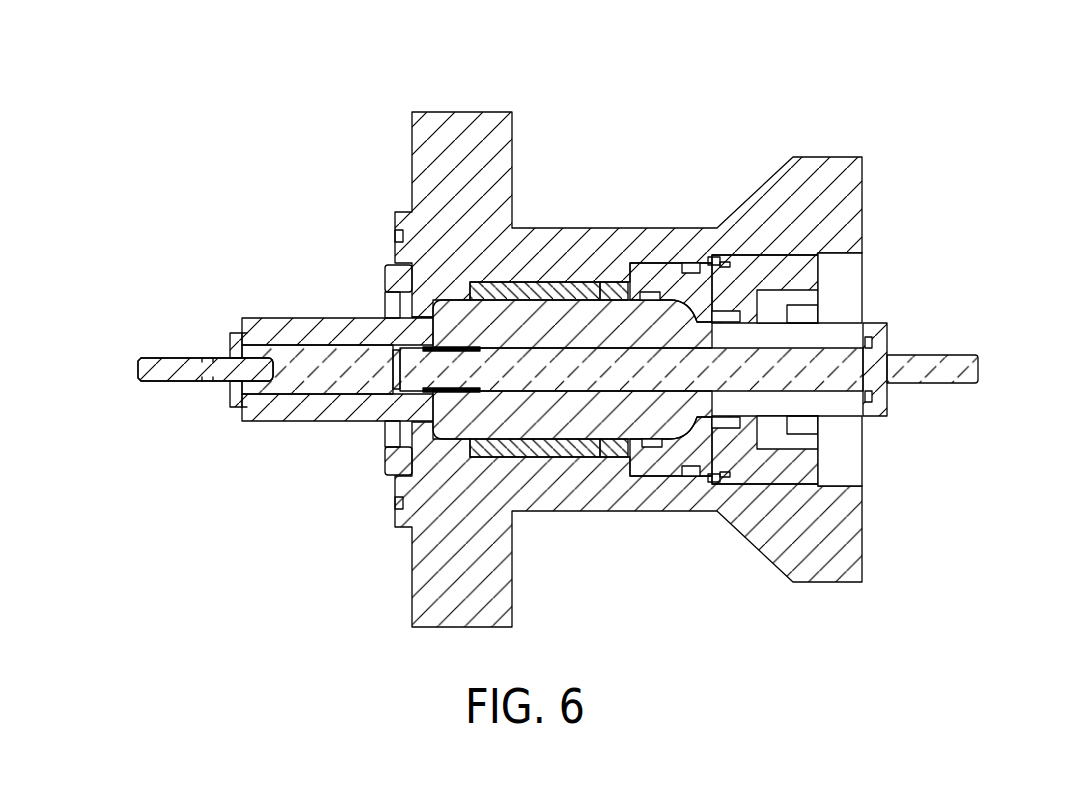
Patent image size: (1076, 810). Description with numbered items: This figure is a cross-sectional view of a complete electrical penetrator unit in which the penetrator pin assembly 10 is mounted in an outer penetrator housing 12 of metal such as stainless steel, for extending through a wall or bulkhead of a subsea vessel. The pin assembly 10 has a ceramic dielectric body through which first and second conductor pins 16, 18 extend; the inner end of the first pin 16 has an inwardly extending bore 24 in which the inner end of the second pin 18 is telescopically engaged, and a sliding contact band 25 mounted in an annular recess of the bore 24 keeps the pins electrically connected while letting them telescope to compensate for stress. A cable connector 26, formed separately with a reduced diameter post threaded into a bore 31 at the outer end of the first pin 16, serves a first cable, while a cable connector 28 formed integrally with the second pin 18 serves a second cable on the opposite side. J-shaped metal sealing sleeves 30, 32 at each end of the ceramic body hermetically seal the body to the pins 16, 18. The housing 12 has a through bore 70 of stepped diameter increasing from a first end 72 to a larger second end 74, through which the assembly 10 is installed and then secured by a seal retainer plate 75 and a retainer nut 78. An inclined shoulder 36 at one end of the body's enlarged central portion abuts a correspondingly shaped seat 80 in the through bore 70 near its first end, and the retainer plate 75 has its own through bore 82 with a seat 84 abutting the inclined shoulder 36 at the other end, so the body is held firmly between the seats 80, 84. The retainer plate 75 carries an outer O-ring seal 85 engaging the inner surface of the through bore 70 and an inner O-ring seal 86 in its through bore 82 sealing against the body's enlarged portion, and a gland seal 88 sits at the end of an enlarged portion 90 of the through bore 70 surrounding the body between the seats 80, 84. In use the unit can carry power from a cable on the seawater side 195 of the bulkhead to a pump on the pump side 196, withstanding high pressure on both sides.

The electrical penetrator pin assembly 10 is at (314, 268).
The outer penetrator housing 12 is at (628, 333).
The first conductor pin 16 is at (285, 353).
The second conductor pin 18 is at (633, 433).
The bore 24 is at (339, 468).
The sliding contact band 25 is at (353, 511).
The cable connector 26 is at (184, 401).
The cable connector 28 is at (965, 341).
The metal sealing sleeve 30 is at (183, 418).
The bore 31 is at (220, 433).
The metal sealing sleeve 32 is at (913, 345).
The inclined shoulder 36 is at (577, 302).
The through bore 70 is at (465, 282).
The first end 72 is at (325, 292).
The second end 74 is at (893, 354).
The seal retainer plate 75 is at (661, 600).
The retainer nut 78 is at (825, 469).
The seat 80 is at (358, 553).
The through bore 82 is at (778, 168).
The seat 84 is at (758, 493).
The outer O-ring seal 85 is at (720, 604).
The inner O-ring seal 86 is at (601, 555).
The gland seal 88 is at (539, 248).
The enlarged portion 90 is at (657, 248).
The seawater side 195 is at (1062, 385).
The pump side 196 is at (84, 365).